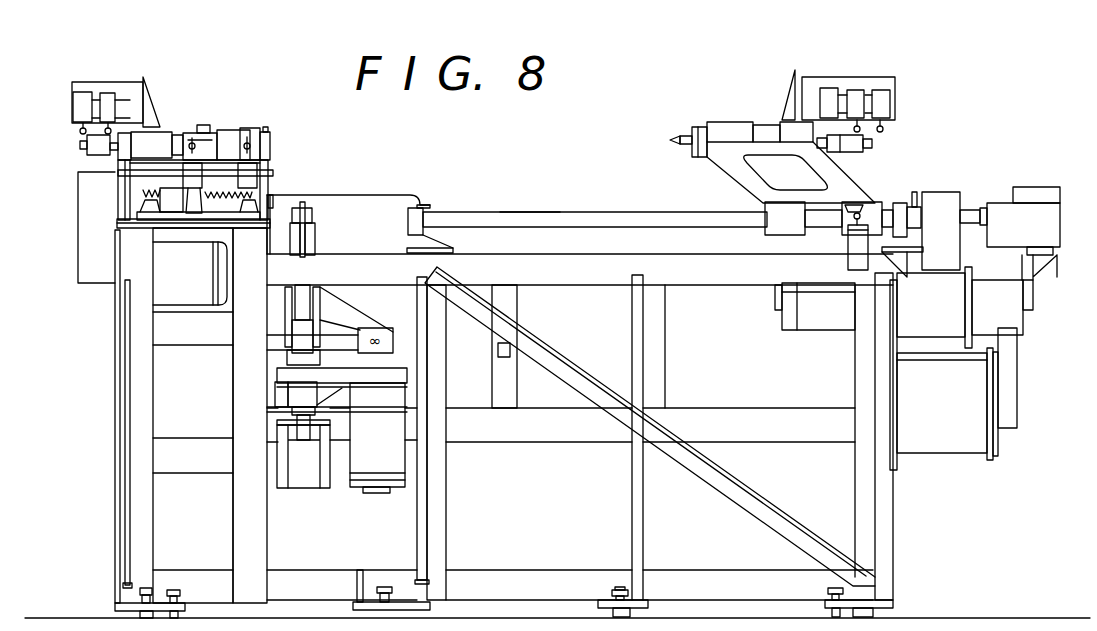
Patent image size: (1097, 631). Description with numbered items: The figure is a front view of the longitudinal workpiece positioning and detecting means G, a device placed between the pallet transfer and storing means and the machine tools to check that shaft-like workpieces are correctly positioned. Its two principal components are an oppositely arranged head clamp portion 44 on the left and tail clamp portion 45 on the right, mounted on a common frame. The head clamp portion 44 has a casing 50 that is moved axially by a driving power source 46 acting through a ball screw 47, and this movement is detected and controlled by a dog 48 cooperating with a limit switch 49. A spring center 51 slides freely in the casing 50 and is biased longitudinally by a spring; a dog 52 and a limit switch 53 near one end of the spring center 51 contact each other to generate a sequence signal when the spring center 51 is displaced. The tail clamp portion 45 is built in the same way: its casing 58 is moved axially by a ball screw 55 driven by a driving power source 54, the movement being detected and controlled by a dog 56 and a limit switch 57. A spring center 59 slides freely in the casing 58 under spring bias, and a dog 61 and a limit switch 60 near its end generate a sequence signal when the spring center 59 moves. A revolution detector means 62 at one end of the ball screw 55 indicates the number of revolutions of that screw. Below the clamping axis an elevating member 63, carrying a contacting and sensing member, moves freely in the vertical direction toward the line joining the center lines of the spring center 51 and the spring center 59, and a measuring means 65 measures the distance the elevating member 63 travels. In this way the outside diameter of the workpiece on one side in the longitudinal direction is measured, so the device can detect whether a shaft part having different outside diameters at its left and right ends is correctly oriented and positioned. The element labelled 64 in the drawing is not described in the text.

The head clamp portion 44 is at (216, 123).
The tail clamp portion 45 is at (757, 121).
The driving power source 46 is at (90, 272).
The ball screw 47 is at (146, 200).
The dog 48 is at (197, 132).
The limit switch 49 is at (189, 146).
The casing 50 is at (237, 128).
The spring center 51 is at (269, 142).
The dog 52 is at (93, 150).
The limit switch 53 is at (86, 100).
The driving power source 54 is at (908, 366).
The ball screw 55 is at (610, 217).
The dog 56 is at (858, 206).
The limit switch 57 is at (850, 243).
The casing 58 is at (718, 163).
The spring center 59 is at (683, 132).
The limit switch 60 is at (828, 94).
The dog 61 is at (844, 148).
The revolution detector means 62 is at (998, 208).
The elevating member 63 is at (305, 247).
The cross head 64 is at (313, 217).
The measuring means 65 is at (313, 484).
The longitudinal workpiece positioning detecting means G is at (533, 197).